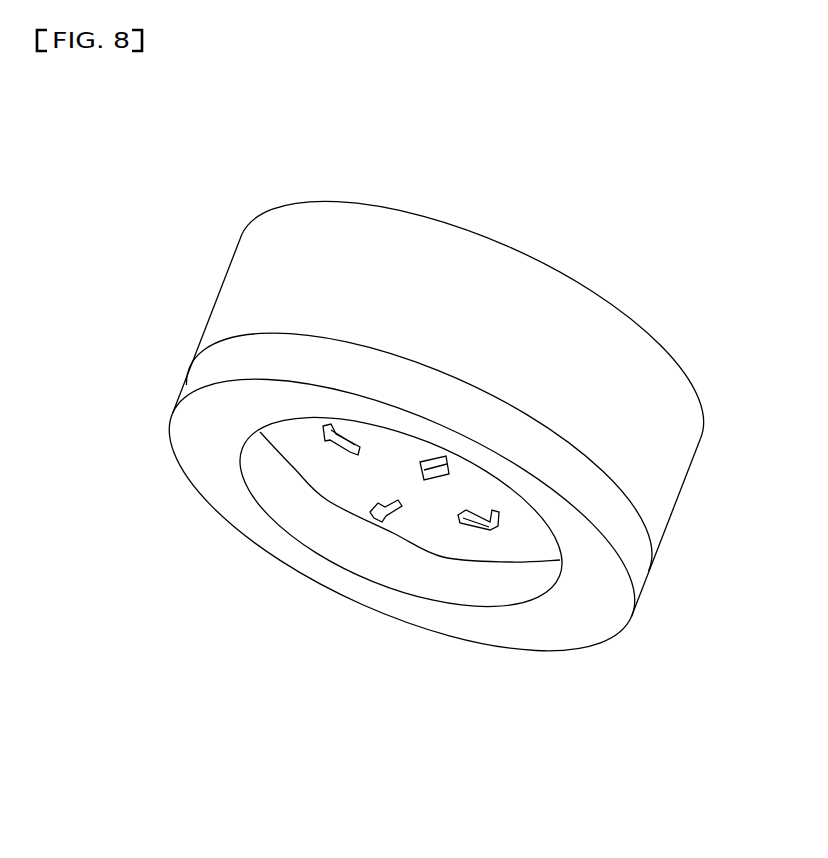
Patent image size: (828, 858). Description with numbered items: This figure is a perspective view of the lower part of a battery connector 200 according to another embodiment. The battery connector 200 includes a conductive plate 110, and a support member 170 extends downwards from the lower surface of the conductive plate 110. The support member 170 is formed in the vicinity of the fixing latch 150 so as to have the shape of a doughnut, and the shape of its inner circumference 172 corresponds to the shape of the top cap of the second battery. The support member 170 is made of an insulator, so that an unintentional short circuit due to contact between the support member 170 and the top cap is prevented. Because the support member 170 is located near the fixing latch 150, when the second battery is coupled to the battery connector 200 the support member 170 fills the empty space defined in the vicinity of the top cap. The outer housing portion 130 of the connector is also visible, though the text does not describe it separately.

The battery connector 200 is at (478, 195).
The conductive plate 110 is at (517, 550).
The housing 130 is at (582, 320).
The fixing latch 150 is at (340, 450).
The support member 170 is at (197, 437).
The inner circumference 172 is at (378, 557).